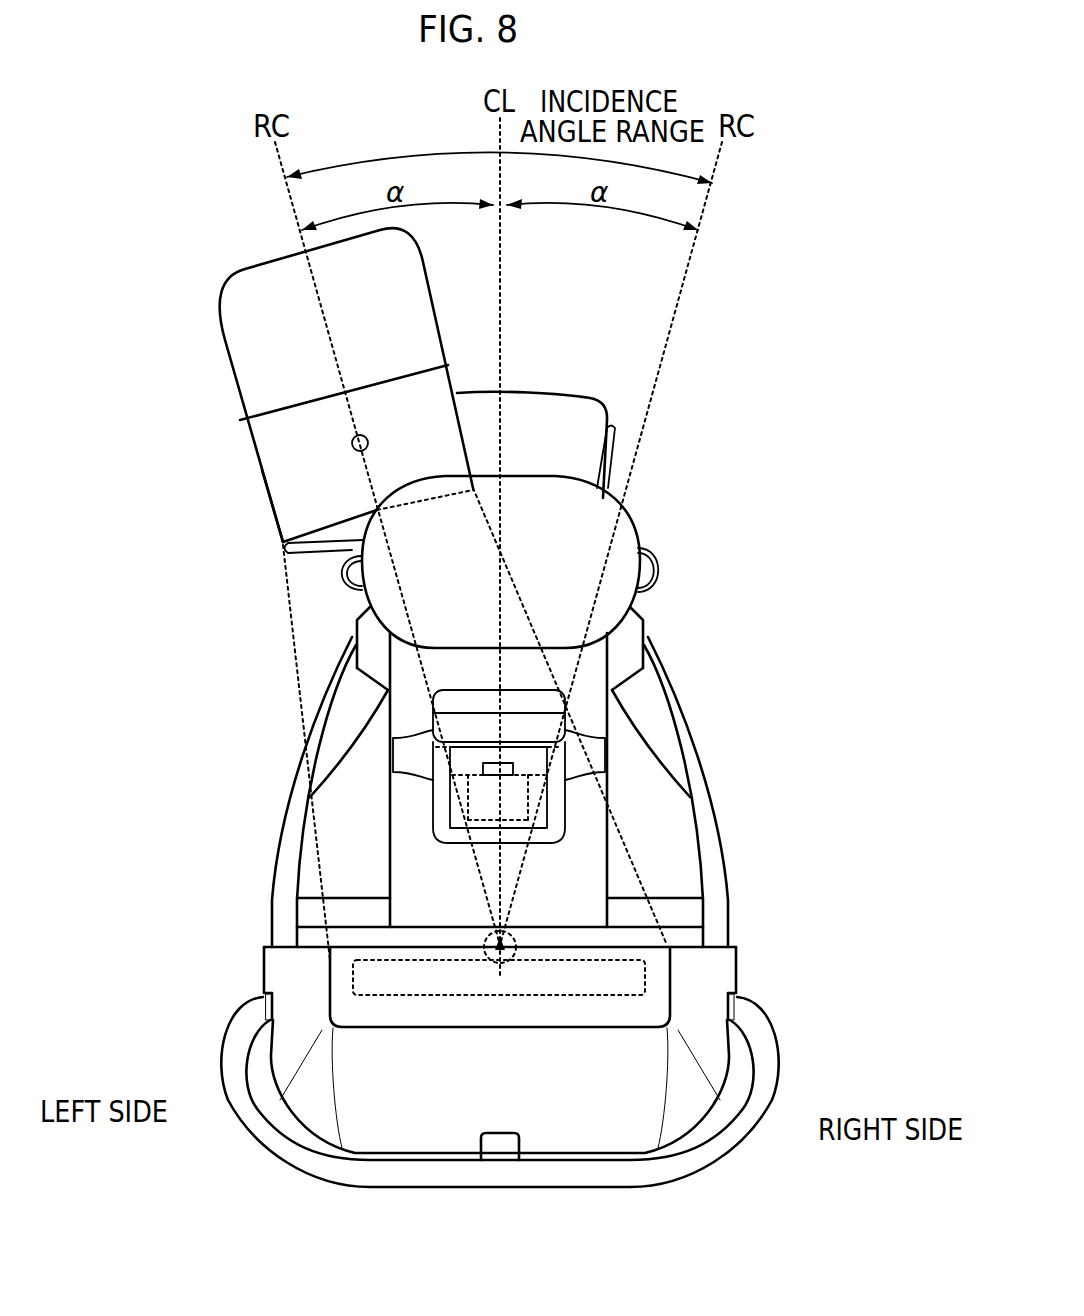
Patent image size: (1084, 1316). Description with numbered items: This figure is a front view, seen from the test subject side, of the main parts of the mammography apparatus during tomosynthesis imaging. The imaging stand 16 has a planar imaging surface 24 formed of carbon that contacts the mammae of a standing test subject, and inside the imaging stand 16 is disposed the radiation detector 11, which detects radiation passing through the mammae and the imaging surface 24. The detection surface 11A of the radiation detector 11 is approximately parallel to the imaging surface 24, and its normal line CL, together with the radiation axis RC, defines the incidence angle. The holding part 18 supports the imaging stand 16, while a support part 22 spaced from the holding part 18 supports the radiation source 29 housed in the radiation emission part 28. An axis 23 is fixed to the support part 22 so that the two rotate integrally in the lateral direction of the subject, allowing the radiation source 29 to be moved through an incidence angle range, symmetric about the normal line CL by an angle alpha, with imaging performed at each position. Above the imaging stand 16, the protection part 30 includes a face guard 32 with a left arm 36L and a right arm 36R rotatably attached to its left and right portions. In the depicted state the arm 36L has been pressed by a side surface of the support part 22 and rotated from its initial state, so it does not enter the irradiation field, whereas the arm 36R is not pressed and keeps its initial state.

The radiation detector 11 is at (423, 997).
The detection surface 11A is at (423, 960).
The imaging stand 16 is at (285, 962).
The holding part 18 is at (580, 428).
The support part 22 is at (267, 382).
The axis 23 is at (500, 973).
The imaging surface 24 is at (675, 930).
The radiation emission part 28 is at (322, 493).
The radiation source 29 is at (350, 448).
The protection part 30 is at (660, 508).
The face guard 32 is at (607, 600).
The left arm 36L is at (312, 550).
The right arm 36R is at (610, 450).